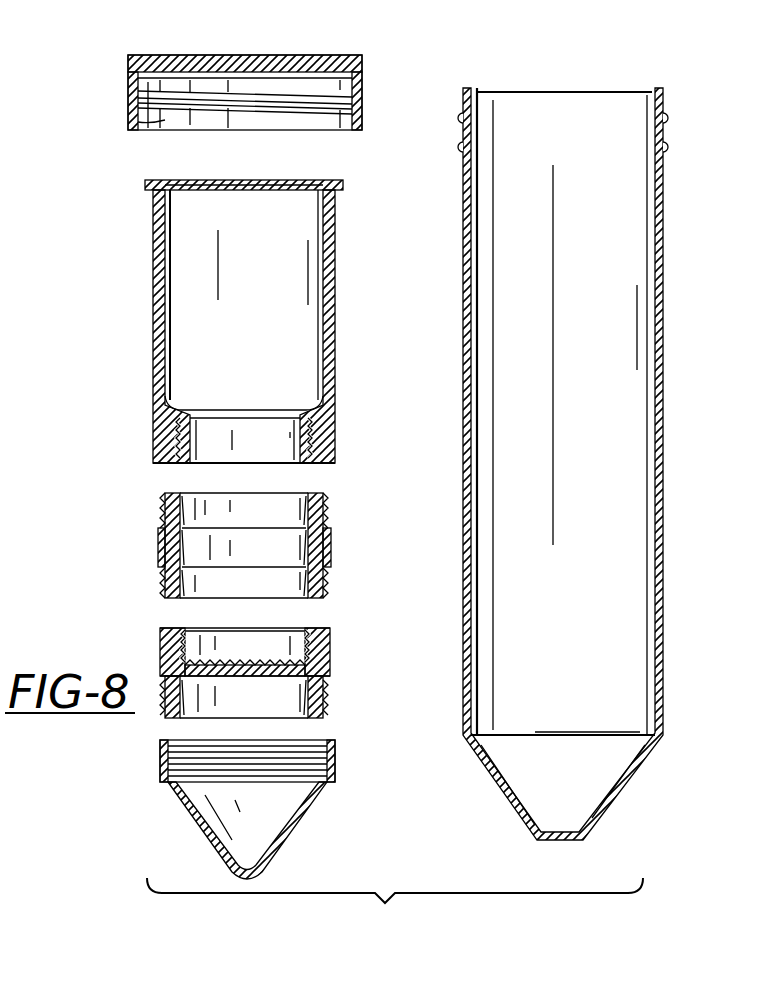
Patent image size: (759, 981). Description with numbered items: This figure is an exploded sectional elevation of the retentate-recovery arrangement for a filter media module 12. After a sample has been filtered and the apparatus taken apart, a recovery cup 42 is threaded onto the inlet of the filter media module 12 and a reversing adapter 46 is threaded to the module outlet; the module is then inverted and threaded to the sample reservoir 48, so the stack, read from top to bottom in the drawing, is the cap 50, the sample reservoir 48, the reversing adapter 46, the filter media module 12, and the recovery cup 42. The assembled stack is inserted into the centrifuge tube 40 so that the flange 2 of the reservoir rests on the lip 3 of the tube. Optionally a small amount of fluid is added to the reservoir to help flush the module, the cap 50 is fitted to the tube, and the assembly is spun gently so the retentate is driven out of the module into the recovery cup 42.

The flange 2 is at (282, 310).
The lip 3 is at (602, 462).
The filter media module 12 is at (344, 653).
The centrifuge tube 40 is at (670, 636).
The recovery cup 42 is at (300, 827).
The reversing adapter 46 is at (338, 546).
The sample reservoir 48 is at (337, 297).
The cap 50 is at (362, 104).